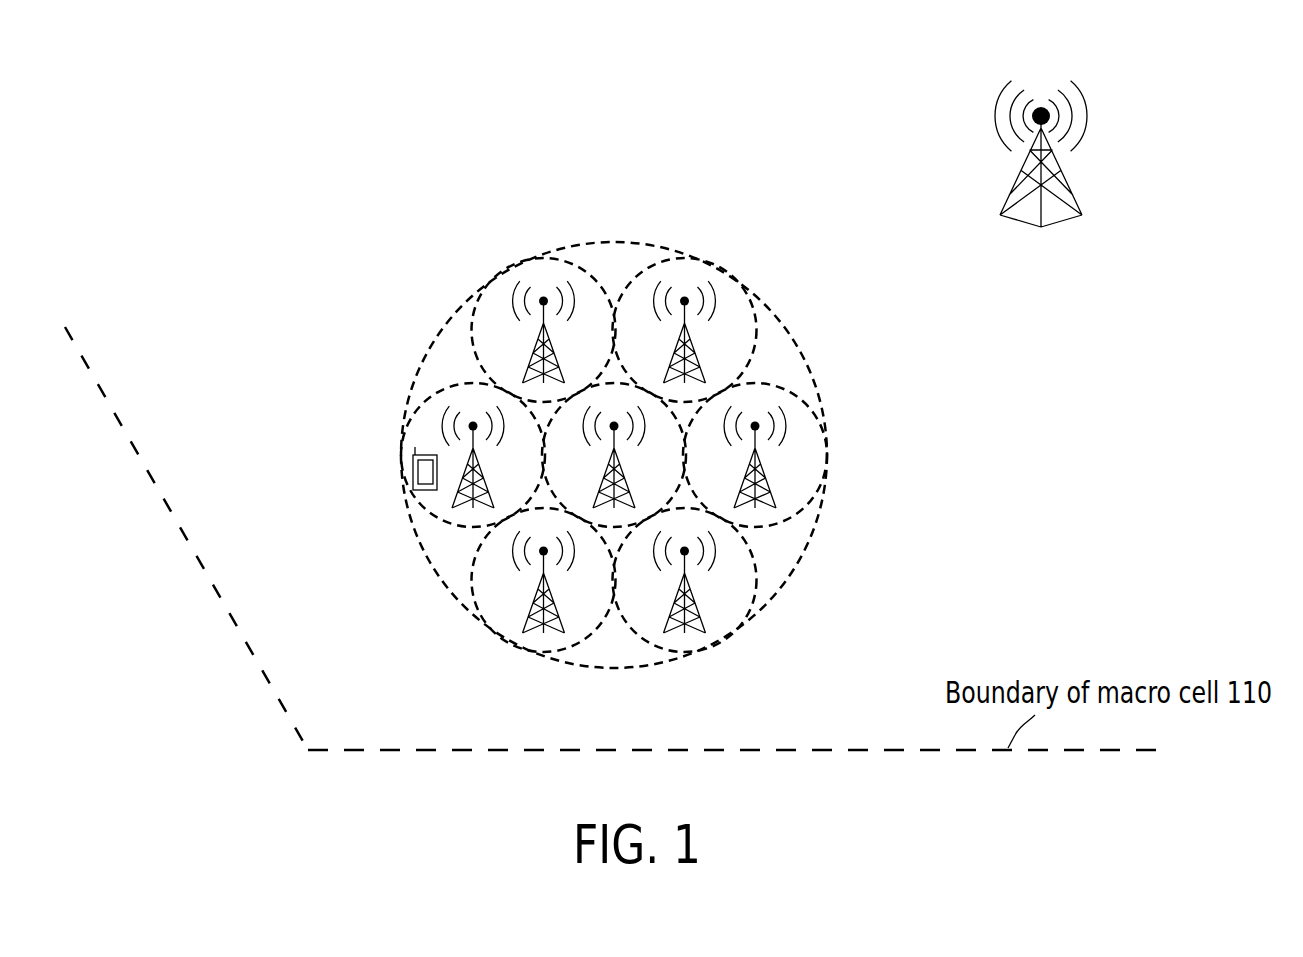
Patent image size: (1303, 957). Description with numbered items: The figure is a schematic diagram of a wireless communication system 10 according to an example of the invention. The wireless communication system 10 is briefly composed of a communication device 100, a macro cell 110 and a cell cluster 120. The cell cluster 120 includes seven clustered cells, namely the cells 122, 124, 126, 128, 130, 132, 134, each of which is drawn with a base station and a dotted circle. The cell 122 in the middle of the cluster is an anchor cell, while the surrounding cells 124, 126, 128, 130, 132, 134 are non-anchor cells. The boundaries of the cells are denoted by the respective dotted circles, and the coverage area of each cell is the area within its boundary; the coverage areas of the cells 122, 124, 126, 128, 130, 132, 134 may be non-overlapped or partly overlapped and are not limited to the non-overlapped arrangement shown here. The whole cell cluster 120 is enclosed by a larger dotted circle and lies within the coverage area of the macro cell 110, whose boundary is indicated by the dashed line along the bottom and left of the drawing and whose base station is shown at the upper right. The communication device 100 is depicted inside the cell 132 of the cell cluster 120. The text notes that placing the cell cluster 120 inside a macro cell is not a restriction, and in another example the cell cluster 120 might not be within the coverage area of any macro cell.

The wireless communication system 10 is at (252, 103).
The communication device 100 is at (411, 466).
The macro cell 110 is at (1085, 167).
The cell cluster 120 is at (622, 241).
The cell 122 is at (614, 527).
The cell 124 is at (756, 322).
The cell 126 is at (812, 503).
The cell 128 is at (757, 596).
The cell 130 is at (460, 606).
The cell 132 is at (405, 510).
The cell 134 is at (471, 322).